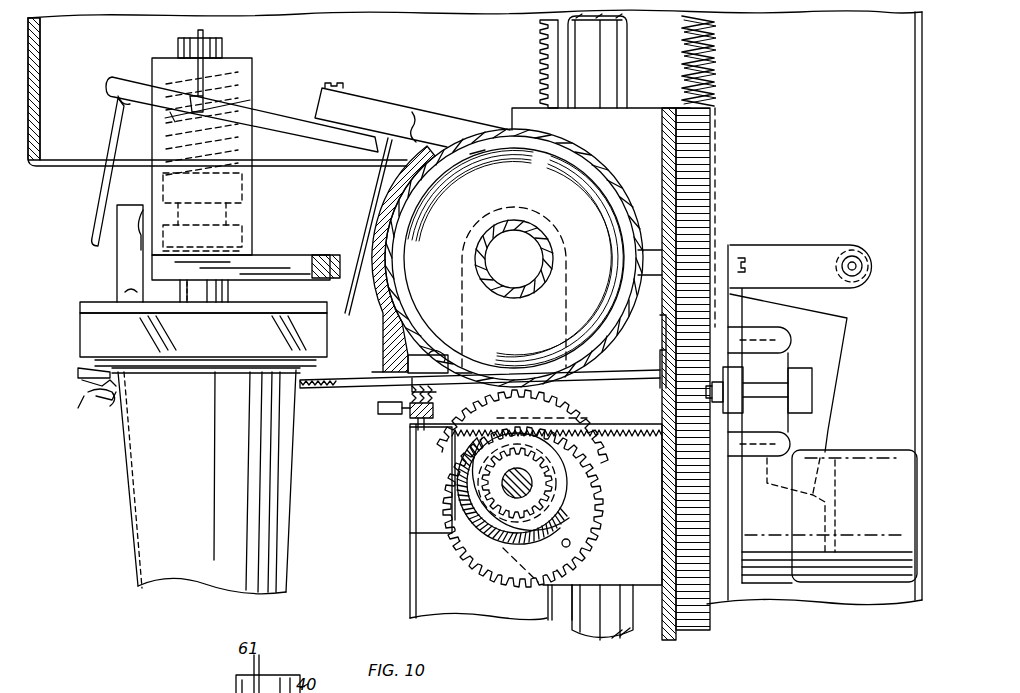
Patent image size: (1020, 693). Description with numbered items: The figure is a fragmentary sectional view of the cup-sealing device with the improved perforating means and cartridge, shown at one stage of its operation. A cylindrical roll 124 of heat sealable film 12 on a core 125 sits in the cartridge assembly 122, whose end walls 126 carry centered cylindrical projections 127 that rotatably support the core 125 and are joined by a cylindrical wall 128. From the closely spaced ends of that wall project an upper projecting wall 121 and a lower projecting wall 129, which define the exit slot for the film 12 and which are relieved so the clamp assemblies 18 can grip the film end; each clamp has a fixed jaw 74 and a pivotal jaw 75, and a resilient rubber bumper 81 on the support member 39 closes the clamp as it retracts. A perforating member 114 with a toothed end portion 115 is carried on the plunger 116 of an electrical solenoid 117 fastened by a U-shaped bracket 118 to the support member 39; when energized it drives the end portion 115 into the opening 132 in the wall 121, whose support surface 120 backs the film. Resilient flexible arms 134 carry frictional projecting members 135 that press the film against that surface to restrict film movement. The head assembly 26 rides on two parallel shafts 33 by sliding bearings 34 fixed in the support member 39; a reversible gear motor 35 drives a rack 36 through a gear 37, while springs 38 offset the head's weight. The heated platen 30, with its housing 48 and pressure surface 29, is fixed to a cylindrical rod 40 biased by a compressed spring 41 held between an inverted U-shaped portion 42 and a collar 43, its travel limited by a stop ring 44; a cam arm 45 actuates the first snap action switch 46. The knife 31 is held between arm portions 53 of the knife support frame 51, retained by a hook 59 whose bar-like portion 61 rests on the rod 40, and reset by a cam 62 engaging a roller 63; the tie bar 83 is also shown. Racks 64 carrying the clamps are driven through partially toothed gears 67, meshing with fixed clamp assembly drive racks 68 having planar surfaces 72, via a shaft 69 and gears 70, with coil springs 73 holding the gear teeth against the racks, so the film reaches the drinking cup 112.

The heat sealable film 12 is at (98, 402).
The clamp assemblies 18 is at (86, 404).
The head assembly 26 is at (318, 248).
The pressure surface 29 is at (80, 372).
The heated platen 30 is at (76, 325).
The knife 31 is at (345, 300).
The parallel shafts 33 is at (622, 40).
The sliding bearings 34 is at (657, 108).
The reversible gear motor 35 is at (872, 450).
The rack 36 is at (707, 168).
The gear 37 is at (735, 396).
The springs 38 is at (716, 62).
The support member 39 is at (266, 274).
The cylindrical rod 40 is at (222, 46).
The compressed spring 41 is at (240, 149).
The inverted U-shaped portion 42 is at (246, 212).
The collar 43 is at (244, 192).
The stop ring 44 is at (244, 234).
The cam arm 45 is at (117, 260).
The first snap action switch 46 is at (150, 200).
The housing 48 is at (184, 345).
The knife support frame 51 is at (416, 98).
The arm portions 53 is at (350, 112).
The hook 59 is at (220, 102).
The bar-like portion 61 is at (197, 34).
The cam 62 is at (826, 452).
The roller 63 is at (860, 252).
The racks 64 is at (320, 388).
The partially toothed gears 67 is at (548, 460).
The clamp assembly drive racks 68 is at (540, 26).
The shaft 69 is at (531, 492).
The gears 70 is at (497, 572).
The planar surface 72 is at (548, 614).
The coil springs 73 is at (530, 545).
The fixed jaw 74 is at (82, 384).
The pivotal jaw 75 is at (60, 408).
The resilient rubber bumper 81 is at (410, 424).
The tie bar 83 is at (96, 190).
The drinking cup 112 is at (278, 530).
The perforating member 114 is at (408, 426).
The end portion 115 is at (522, 426).
The plunger 116 is at (426, 420).
The electrical solenoid 117 is at (414, 514).
The U-shaped bracket 118 is at (536, 521).
The support surface 120 is at (372, 330).
The upper projecting wall 121 is at (372, 360).
The cartridge assembly 122 is at (591, 151).
The cylindrical roll 124 is at (588, 190).
The core 125 is at (526, 236).
The end walls 126 is at (486, 150).
The cylindrical projections 127 is at (530, 257).
The cylindrical wall 128 is at (558, 142).
The lower projecting wall 129 is at (518, 370).
The opening 132 is at (430, 354).
The resilient flexible arms 134 is at (586, 392).
The projecting members 135 is at (378, 406).